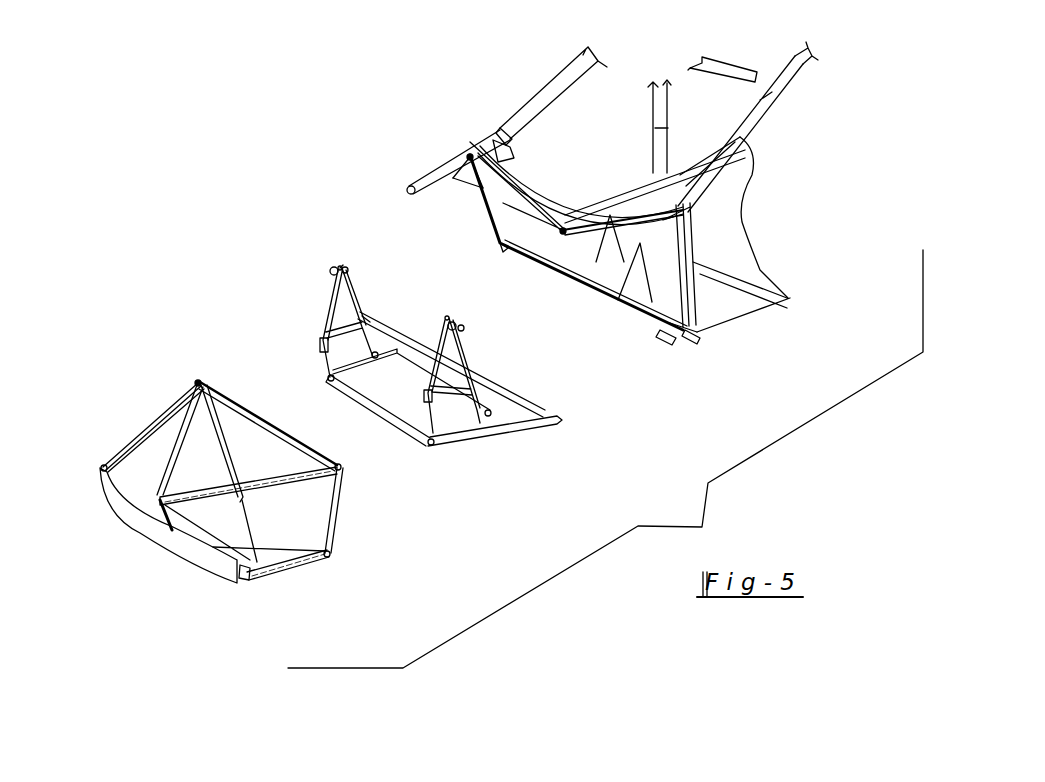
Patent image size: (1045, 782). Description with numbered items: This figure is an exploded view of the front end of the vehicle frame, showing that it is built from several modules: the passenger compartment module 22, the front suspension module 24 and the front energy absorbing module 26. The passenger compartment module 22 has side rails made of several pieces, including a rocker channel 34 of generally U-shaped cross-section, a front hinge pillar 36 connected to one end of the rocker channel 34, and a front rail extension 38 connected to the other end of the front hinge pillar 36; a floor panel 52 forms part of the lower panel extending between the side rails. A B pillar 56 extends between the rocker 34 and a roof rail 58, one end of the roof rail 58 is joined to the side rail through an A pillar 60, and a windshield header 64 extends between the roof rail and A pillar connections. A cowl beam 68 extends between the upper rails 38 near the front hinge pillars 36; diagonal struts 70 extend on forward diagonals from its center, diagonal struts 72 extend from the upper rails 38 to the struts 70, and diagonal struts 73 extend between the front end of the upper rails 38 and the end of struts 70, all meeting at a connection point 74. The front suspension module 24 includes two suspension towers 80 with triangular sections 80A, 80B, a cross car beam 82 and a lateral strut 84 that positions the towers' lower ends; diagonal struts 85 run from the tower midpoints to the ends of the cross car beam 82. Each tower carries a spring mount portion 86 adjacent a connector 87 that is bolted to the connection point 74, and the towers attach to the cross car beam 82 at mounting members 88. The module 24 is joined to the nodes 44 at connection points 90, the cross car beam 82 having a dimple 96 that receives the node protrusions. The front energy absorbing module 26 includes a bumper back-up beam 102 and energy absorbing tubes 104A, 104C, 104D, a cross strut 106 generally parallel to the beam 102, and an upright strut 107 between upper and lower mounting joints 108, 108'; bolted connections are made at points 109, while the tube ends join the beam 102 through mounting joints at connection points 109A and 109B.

The passenger compartment module 22 is at (560, 73).
The front suspension module 24 is at (518, 424).
The front energy absorbing module 26 is at (160, 410).
The rocker channel 34 is at (646, 174).
The front hinge pillar 36 is at (686, 283).
The front rail extension 38 is at (469, 153).
The node 44 is at (509, 145).
The floor panel 52 is at (733, 203).
The B pillar 56 is at (668, 128).
The roof rail 58 is at (793, 60).
The A pillar 60 is at (738, 129).
The windshield header 64 is at (721, 68).
The cowl beam 68 is at (524, 189).
The diagonal strut 70 is at (551, 195).
The diagonal strut 72 is at (499, 244).
The diagonal strut 73 is at (453, 179).
The connection point 74 is at (465, 158).
The suspension tower 80 is at (328, 318).
The suspension tower triangular section 80A is at (361, 292).
The suspension tower triangular section 80B is at (324, 346).
The cross car beam 82 is at (418, 363).
The lateral strut 84 is at (379, 421).
The diagonal strut 85 is at (366, 318).
The spring mount portion 86 is at (330, 271).
The connector 87 is at (343, 268).
The mounting member 88 is at (378, 350).
The connection point 90 is at (670, 338).
The dimple 96 is at (548, 394).
The bumper back-up beam 102 is at (137, 522).
The energy absorbing tube 104A is at (263, 480).
The energy absorbing tube 104C is at (245, 552).
The energy absorbing tube 104D is at (277, 569).
The cross strut 106 is at (253, 416).
The upright strut 107 is at (207, 434).
The mounting joint 108 is at (295, 464).
The joint 108' is at (137, 413).
The connection point 109 is at (409, 192).
The connection point 109A is at (160, 514).
The connection point 109B is at (102, 464).